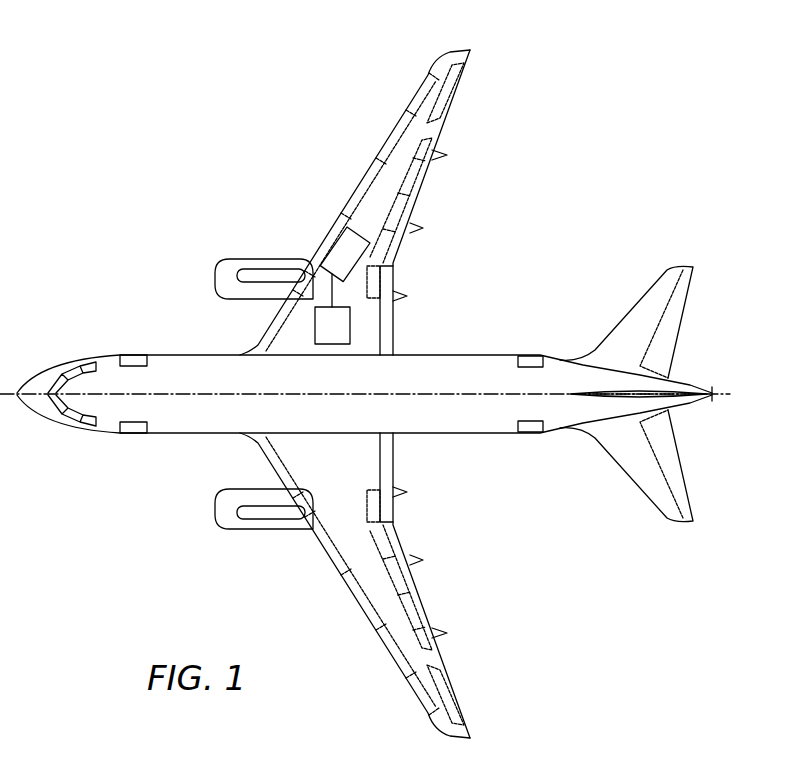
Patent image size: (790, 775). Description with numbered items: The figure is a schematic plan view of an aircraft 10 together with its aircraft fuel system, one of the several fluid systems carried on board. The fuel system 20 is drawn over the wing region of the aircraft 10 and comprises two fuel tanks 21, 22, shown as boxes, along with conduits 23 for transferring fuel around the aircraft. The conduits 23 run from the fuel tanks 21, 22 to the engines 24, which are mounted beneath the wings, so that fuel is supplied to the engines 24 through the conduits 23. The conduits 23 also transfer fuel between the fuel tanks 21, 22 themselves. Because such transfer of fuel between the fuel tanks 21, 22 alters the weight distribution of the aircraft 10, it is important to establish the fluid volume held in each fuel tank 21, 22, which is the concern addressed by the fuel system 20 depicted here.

The aircraft 10 is at (640, 203).
The fuel system 20 is at (205, 205).
The fuel tank 21 is at (335, 247).
The fuel tank 22 is at (315, 330).
The conduits 23 is at (337, 300).
The engines 24 is at (215, 279).